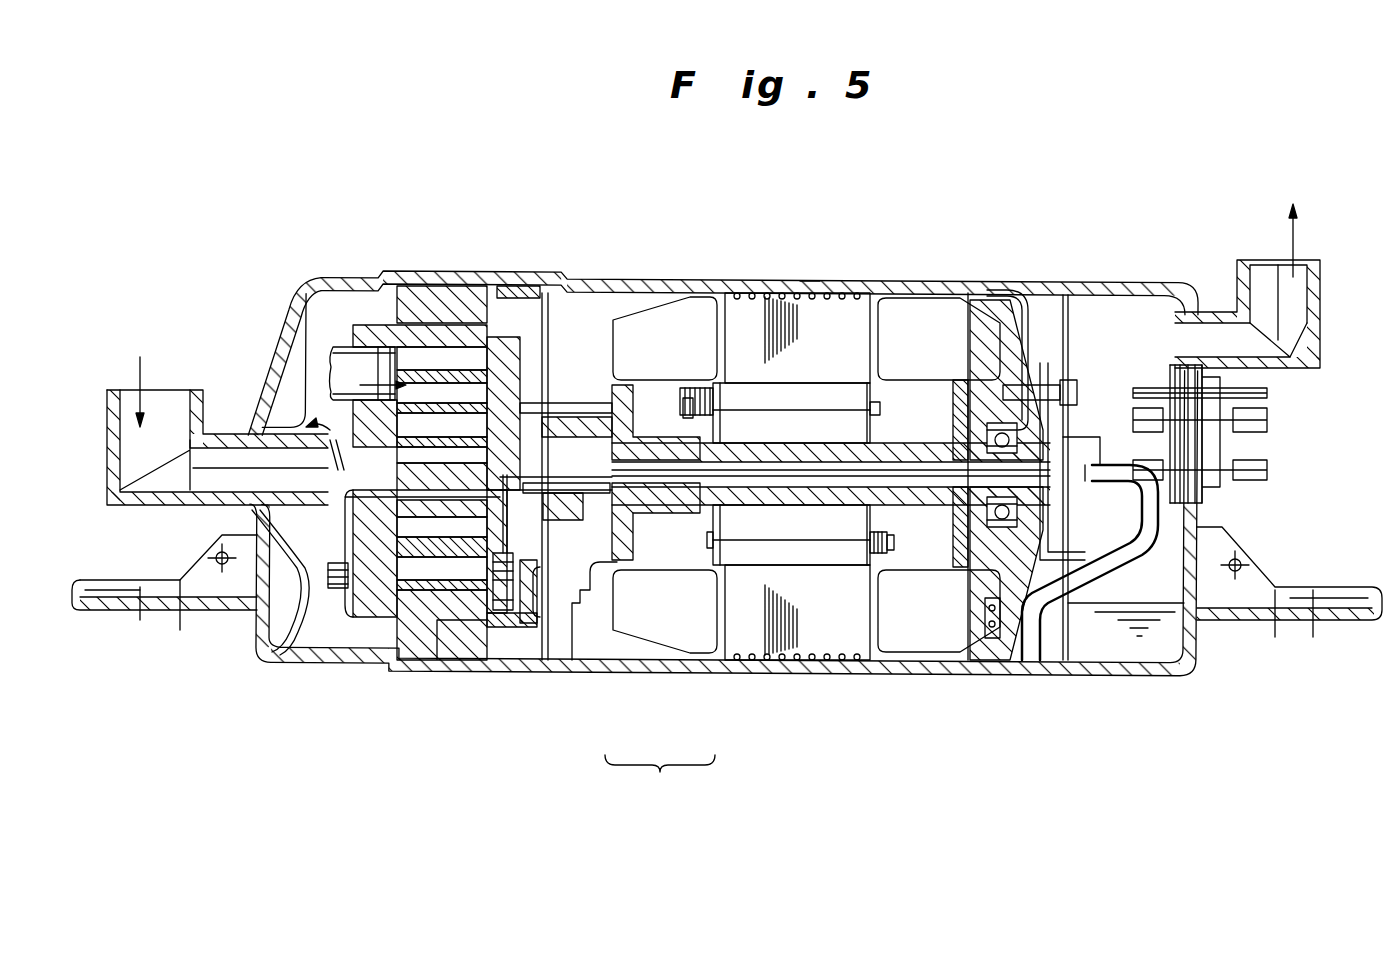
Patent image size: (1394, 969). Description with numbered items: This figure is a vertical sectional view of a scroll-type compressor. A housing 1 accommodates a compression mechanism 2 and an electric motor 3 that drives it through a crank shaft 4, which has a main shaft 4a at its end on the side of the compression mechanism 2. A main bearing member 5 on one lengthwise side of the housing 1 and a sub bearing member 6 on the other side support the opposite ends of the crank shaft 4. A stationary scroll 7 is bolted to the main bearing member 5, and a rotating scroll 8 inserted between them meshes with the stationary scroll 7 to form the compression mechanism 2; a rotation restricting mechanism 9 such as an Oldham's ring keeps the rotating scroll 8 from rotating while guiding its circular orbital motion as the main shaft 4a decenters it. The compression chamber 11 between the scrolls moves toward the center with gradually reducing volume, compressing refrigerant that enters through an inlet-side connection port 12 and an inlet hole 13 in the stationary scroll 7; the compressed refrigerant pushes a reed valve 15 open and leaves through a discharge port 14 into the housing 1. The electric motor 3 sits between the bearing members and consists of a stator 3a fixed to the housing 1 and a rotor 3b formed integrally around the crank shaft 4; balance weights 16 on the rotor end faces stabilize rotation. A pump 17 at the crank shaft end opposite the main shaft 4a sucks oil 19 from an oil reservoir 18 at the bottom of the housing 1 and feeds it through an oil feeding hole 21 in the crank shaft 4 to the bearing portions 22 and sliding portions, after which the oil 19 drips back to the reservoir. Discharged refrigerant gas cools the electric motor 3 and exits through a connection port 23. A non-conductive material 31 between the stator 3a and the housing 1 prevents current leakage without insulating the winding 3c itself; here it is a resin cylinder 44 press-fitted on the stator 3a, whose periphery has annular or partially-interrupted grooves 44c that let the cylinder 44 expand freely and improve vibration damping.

The housing 1 is at (703, 276).
The compression mechanism 2 is at (440, 622).
The electric motor 3 is at (660, 783).
The stator 3a is at (745, 640).
The rotor 3b is at (773, 532).
The winding 3c is at (910, 318).
The crank shaft 4 is at (817, 503).
The main shaft 4a is at (580, 527).
The main bearing member 5 is at (577, 340).
The sub bearing member 6 is at (1042, 300).
The stationary scroll 7 is at (383, 483).
The rotating scroll 8 is at (493, 332).
The rotation restricting mechanism 9 is at (505, 615).
The compression chamber 11 is at (443, 372).
The inlet-side connection port 12 is at (172, 408).
The inlet hole 13 is at (382, 345).
The discharge port 14 is at (312, 497).
The reed valve 15 is at (313, 497).
The balance weight 16 is at (695, 383).
The pump 17 is at (1080, 435).
The oil reservoir 18 is at (1100, 640).
The oil 19 is at (1160, 583).
The oil feeding hole 21 is at (900, 465).
The bearing portions 22 is at (612, 389).
The connection port 23 is at (1308, 296).
The non-conductive material 31 is at (807, 286).
The cylinder 44 is at (767, 290).
The grooves 44c is at (830, 300).